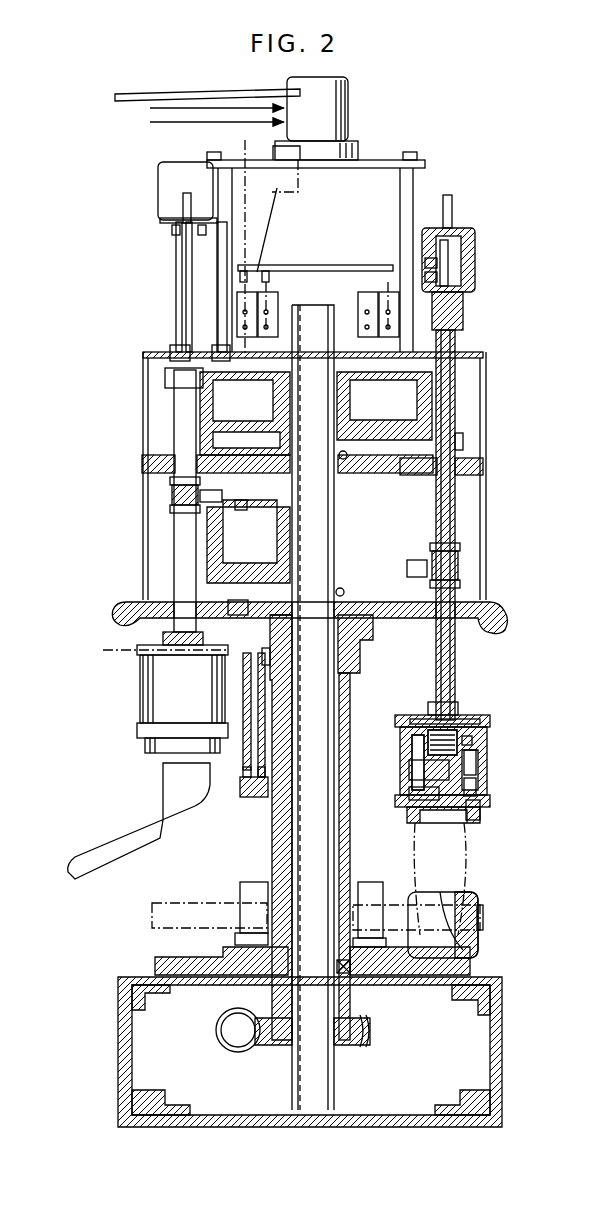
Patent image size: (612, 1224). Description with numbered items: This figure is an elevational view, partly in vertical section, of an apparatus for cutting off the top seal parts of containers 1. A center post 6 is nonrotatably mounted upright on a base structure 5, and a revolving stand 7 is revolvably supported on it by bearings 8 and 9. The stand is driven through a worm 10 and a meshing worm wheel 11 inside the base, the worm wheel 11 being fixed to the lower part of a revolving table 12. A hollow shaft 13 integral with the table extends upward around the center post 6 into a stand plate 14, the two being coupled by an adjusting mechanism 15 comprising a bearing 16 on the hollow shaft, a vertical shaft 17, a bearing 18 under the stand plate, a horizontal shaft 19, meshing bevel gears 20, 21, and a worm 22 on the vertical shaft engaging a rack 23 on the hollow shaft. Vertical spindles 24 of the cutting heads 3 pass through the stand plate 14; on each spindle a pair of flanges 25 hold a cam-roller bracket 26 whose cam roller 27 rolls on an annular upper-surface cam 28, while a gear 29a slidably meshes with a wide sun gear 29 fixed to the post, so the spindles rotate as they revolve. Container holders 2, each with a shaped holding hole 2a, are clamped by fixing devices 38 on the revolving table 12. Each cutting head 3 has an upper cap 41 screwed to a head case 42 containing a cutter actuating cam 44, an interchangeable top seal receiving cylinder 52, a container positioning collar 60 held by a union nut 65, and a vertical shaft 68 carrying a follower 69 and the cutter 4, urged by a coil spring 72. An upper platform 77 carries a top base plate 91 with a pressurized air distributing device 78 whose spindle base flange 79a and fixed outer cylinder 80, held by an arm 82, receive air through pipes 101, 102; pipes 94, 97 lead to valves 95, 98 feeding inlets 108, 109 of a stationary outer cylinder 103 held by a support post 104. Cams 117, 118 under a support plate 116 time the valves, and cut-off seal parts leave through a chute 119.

The container 1 is at (467, 842).
The container holder 2 is at (483, 918).
The holding hole 2a is at (465, 892).
The cutting head 3 is at (135, 697).
The cutter 4 is at (441, 823).
The base structure 5 is at (118, 1045).
The center post 6 is at (322, 850).
The revolving stand 7 is at (515, 627).
The bearing 8 is at (345, 456).
The bearing 9 is at (337, 594).
The worm 10 is at (218, 1040).
The worm wheel 11 is at (272, 1048).
The revolving table 12 is at (165, 958).
The hollow shaft 13 is at (351, 727).
The stand plate 14 is at (470, 603).
The adjusting mechanism 15 is at (237, 755).
The bearing 16 is at (252, 713).
The vertical shaft 17 is at (245, 685).
The bearing 18 is at (150, 636).
The horizontal shaft 19 is at (240, 605).
The bevel gear 20 is at (292, 660).
The bevel gear 21 is at (292, 628).
The worm 22 is at (245, 797).
The rack 23 is at (270, 820).
The vertical spindle 24 is at (174, 553).
The flange 25 is at (170, 481).
The cam-roller bracket 26 is at (172, 496).
The cam roller 27 is at (222, 495).
The upper-surface cam 28 is at (165, 378).
The sun gear 29 is at (200, 420).
The gear 29a is at (465, 444).
The fixing device 38 is at (198, 898).
The upper cap 41 is at (416, 716).
The head case 42 is at (410, 753).
The cutter actuating cam 44 is at (456, 729).
The top seal receiving cylinder 52 is at (408, 778).
The container positioning collar 60 is at (418, 793).
The union nut 65 is at (480, 812).
The vertical shaft 68 is at (478, 790).
The follower 69 is at (478, 758).
The coil spring 72 is at (472, 741).
The upper platform 77 is at (470, 357).
The pressurized air distributing device 78 is at (352, 110).
The base flange 79a is at (276, 148).
The outer cylinder 80 is at (350, 131).
The arm 82 is at (128, 99).
The top base plate 91 is at (390, 158).
The pipe 94 is at (304, 183).
The valve 95 is at (290, 305).
The pipe 97 is at (248, 205).
The valve 98 is at (240, 310).
The pipe 101 is at (228, 110).
The pipe 102 is at (220, 126).
The outer cylinder 103 is at (160, 196).
The support post 104 is at (185, 215).
The pressurized air inlet 108 is at (425, 262).
The pressurized air inlet 109 is at (425, 277).
The support plate 116 is at (378, 265).
The cam 117 is at (266, 272).
The cam 118 is at (238, 276).
The chute 119 is at (158, 818).